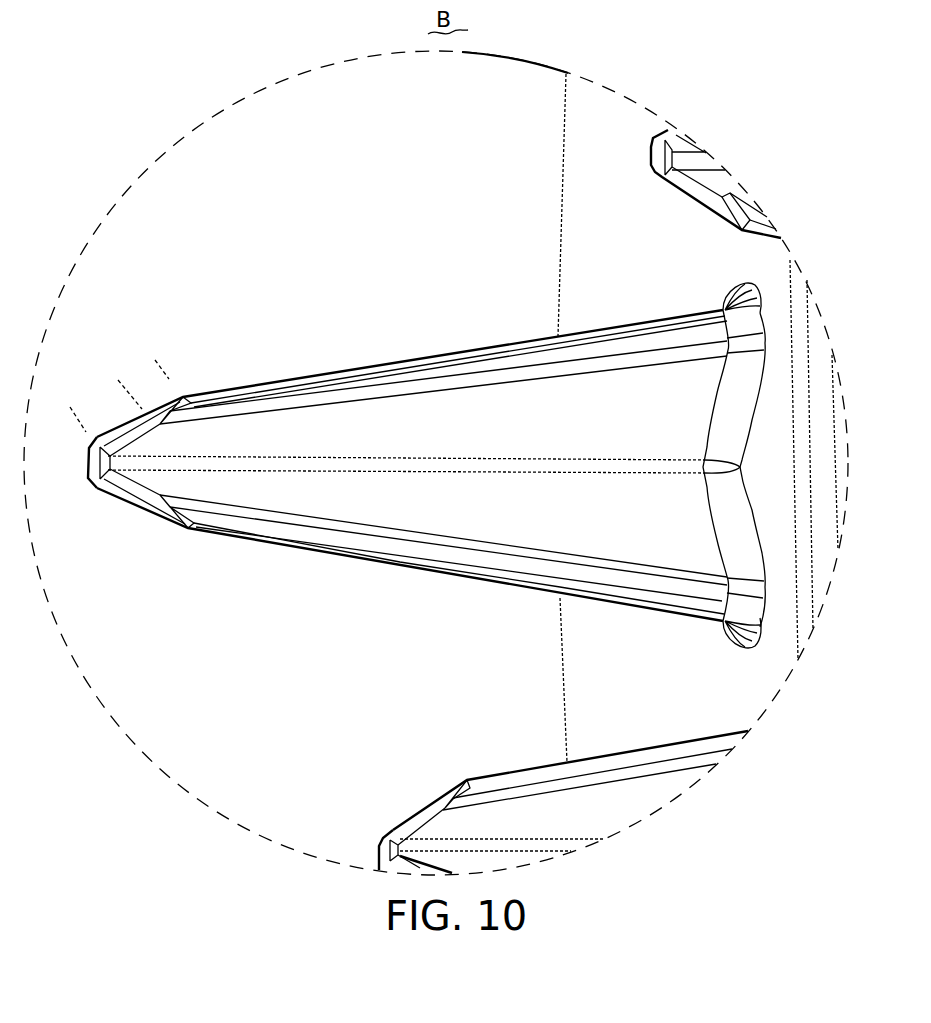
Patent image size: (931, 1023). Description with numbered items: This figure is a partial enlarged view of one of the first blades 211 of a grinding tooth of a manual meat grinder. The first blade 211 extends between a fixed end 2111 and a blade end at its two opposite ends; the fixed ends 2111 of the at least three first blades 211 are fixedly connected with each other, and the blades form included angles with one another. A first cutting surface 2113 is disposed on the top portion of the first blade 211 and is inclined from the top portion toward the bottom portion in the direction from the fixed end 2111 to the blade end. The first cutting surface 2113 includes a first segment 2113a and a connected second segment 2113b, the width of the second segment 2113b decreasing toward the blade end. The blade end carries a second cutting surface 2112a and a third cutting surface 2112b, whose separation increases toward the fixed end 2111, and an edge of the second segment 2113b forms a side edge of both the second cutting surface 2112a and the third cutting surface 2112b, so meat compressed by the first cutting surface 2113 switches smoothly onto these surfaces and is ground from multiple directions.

The first blade 211 is at (475, 430).
The fixed end 2111 is at (567, 470).
The second cutting surface 2112a is at (327, 390).
The third cutting surface 2112b is at (297, 536).
The first cutting surface 2113 is at (128, 498).
The first segment 2113a is at (123, 432).
The second segment 2113b is at (175, 394).